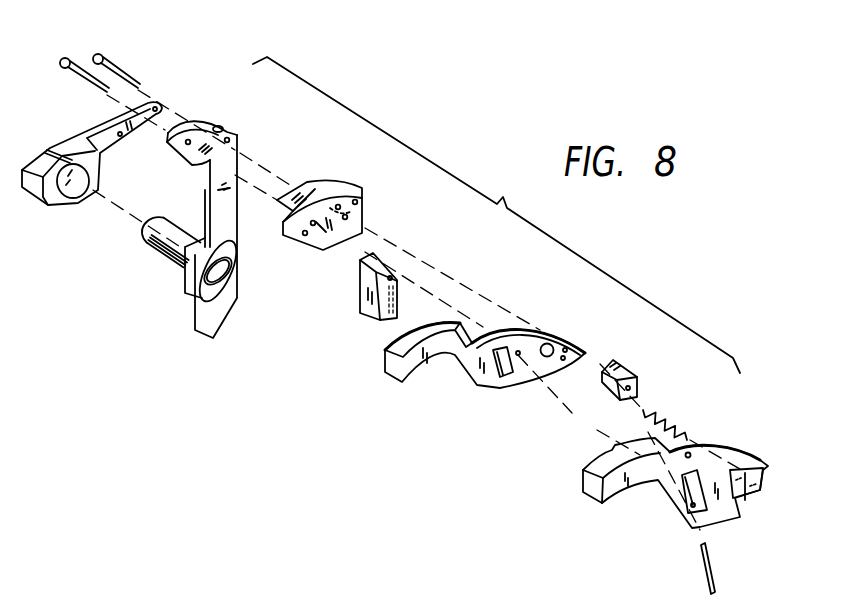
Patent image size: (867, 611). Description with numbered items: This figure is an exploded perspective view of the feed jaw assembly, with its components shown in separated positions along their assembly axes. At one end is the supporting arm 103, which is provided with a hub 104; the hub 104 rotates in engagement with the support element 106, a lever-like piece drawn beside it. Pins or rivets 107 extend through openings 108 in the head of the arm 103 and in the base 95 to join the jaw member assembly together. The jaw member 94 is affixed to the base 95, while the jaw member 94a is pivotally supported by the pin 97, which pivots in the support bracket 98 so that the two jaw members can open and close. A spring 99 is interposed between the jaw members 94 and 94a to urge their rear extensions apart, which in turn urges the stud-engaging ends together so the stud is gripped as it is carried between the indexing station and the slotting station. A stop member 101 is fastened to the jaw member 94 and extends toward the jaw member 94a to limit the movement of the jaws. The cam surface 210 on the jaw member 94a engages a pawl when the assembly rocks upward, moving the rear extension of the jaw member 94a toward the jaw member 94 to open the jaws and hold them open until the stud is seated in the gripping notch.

The jaw member 94 is at (495, 327).
The jaw member 94a is at (615, 492).
The base 95 is at (377, 167).
The pin 97 is at (703, 570).
The support bracket 98 is at (377, 315).
The spring 99 is at (657, 415).
The stop member 101 is at (658, 343).
The supporting arm 103 is at (237, 213).
The hub 104 is at (157, 260).
The support element 106 is at (53, 208).
The pins or rivets 107 is at (128, 73).
The openings 108 is at (168, 142).
The cam surface 210 is at (790, 487).